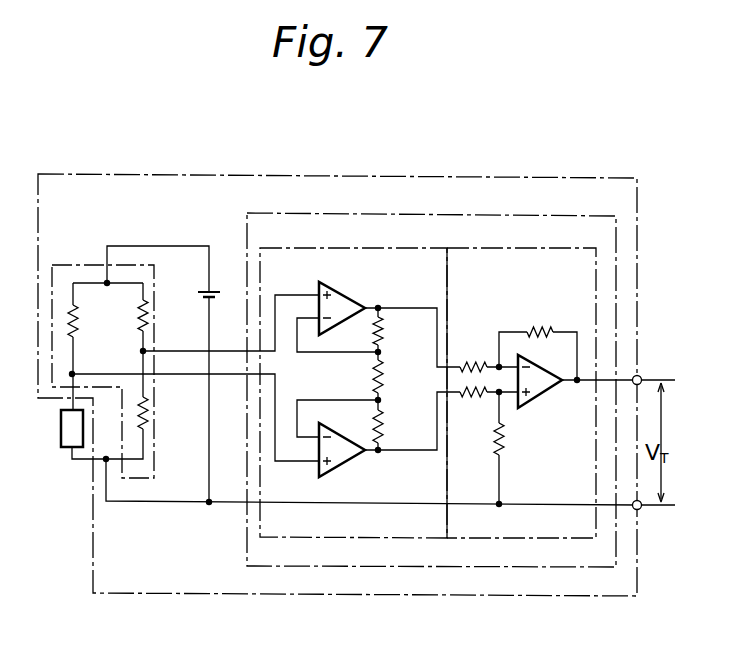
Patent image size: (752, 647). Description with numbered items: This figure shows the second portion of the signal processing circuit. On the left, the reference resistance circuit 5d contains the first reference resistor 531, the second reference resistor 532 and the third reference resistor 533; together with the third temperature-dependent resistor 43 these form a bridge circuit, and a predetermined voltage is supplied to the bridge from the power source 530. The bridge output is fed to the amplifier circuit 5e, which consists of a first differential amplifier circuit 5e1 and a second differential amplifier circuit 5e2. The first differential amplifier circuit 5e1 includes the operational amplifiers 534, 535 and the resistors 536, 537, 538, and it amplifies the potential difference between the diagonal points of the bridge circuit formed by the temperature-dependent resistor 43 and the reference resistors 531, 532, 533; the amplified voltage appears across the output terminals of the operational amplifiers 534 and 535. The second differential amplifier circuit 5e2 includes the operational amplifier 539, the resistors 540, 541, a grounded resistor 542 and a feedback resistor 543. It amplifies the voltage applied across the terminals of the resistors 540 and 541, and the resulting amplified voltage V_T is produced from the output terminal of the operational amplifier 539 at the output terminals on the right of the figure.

The reference resistance circuit 5d is at (75, 263).
The amplifier circuit 5e is at (450, 214).
The first differential amplifier circuit 5e1 is at (270, 246).
The second differential amplifier circuit 5e2 is at (495, 247).
The third temperature-dependent resistor 43 is at (63, 448).
The power source 530 is at (218, 291).
The first reference resistor 531 is at (78, 319).
The second reference resistor 532 is at (149, 319).
The third reference resistor 533 is at (148, 421).
The operational amplifier 534 is at (342, 298).
The operational amplifier 535 is at (346, 462).
The resistor 536 is at (383, 331).
The resistor 537 is at (383, 371).
The resistor 538 is at (382, 418).
The operational amplifier 539 is at (549, 393).
The resistor 540 is at (469, 363).
The resistor 541 is at (468, 397).
The grounded resistor 542 is at (506, 446).
The feedback resistor 543 is at (541, 327).